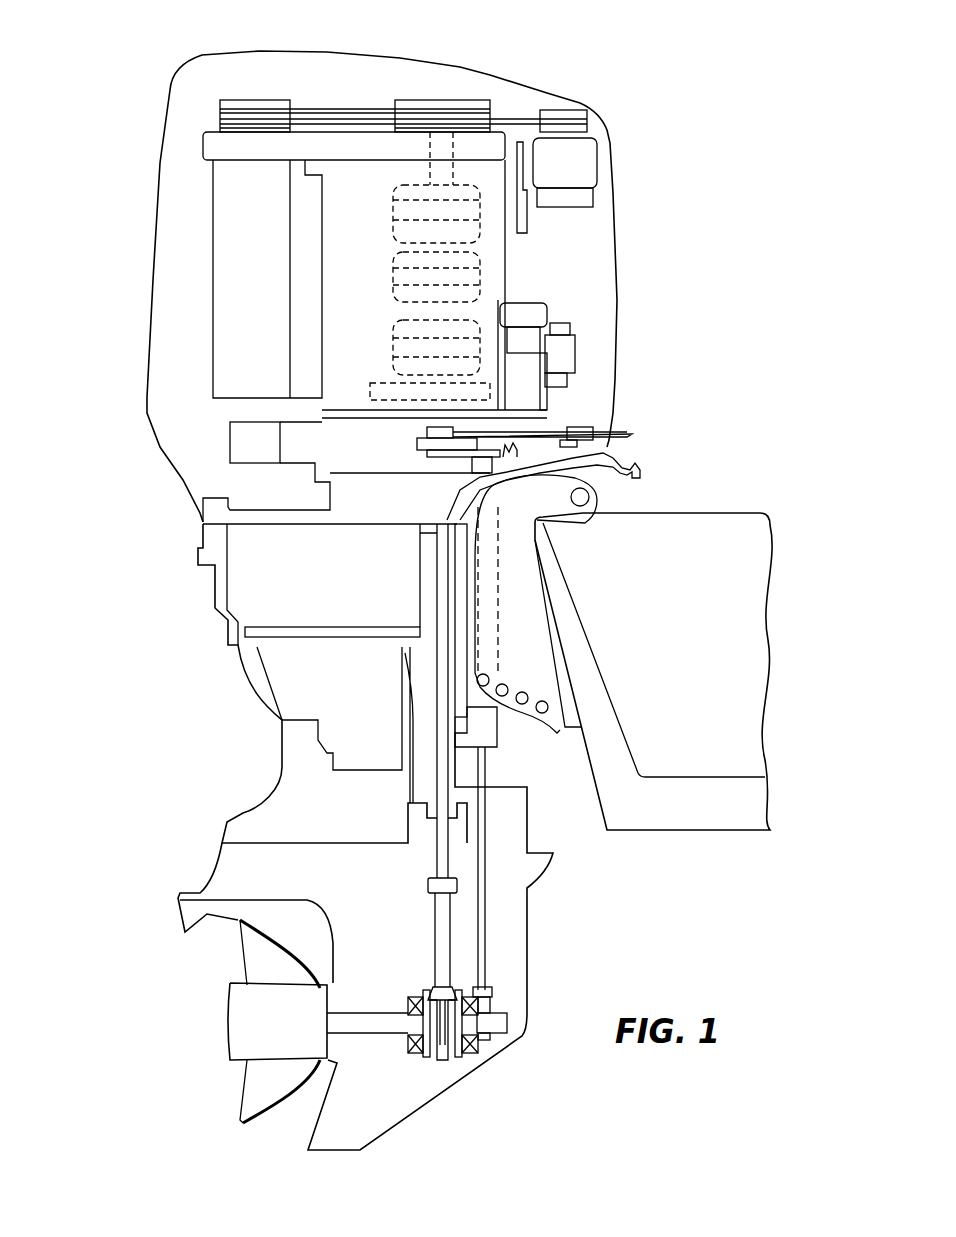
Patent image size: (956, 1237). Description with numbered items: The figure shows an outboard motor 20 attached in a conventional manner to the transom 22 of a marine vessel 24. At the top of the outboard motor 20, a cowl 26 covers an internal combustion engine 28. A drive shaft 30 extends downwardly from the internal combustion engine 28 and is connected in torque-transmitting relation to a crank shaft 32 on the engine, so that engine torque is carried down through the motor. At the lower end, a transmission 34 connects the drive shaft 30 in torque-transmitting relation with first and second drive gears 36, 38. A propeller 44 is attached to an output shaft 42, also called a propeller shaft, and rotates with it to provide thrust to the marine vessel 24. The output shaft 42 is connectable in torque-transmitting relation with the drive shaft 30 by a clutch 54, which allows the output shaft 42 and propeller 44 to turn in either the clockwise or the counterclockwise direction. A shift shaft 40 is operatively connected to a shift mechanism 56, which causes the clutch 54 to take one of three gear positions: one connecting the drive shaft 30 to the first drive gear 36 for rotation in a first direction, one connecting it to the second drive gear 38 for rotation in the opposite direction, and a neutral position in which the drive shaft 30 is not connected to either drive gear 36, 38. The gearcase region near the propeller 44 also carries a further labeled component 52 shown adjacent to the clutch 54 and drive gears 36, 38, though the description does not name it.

The outboard motor 20 is at (692, 72).
The transom 22 is at (593, 630).
The marine vessel 24 is at (748, 504).
The cowl 26 is at (155, 238).
The internal combustion engine 28 is at (240, 330).
The drive shaft 30 is at (447, 612).
The crank shaft 32 is at (443, 280).
The transmission 34 is at (437, 1078).
The first drive gear 36 is at (432, 1047).
The second drive gear 38 is at (448, 1057).
The shift shaft 40 is at (487, 897).
The output shaft 42 is at (368, 1017).
The propeller 44 is at (262, 1107).
The gear coupling 52 is at (453, 984).
The clutch 54 is at (451, 1077).
The shift mechanism 56 is at (508, 996).